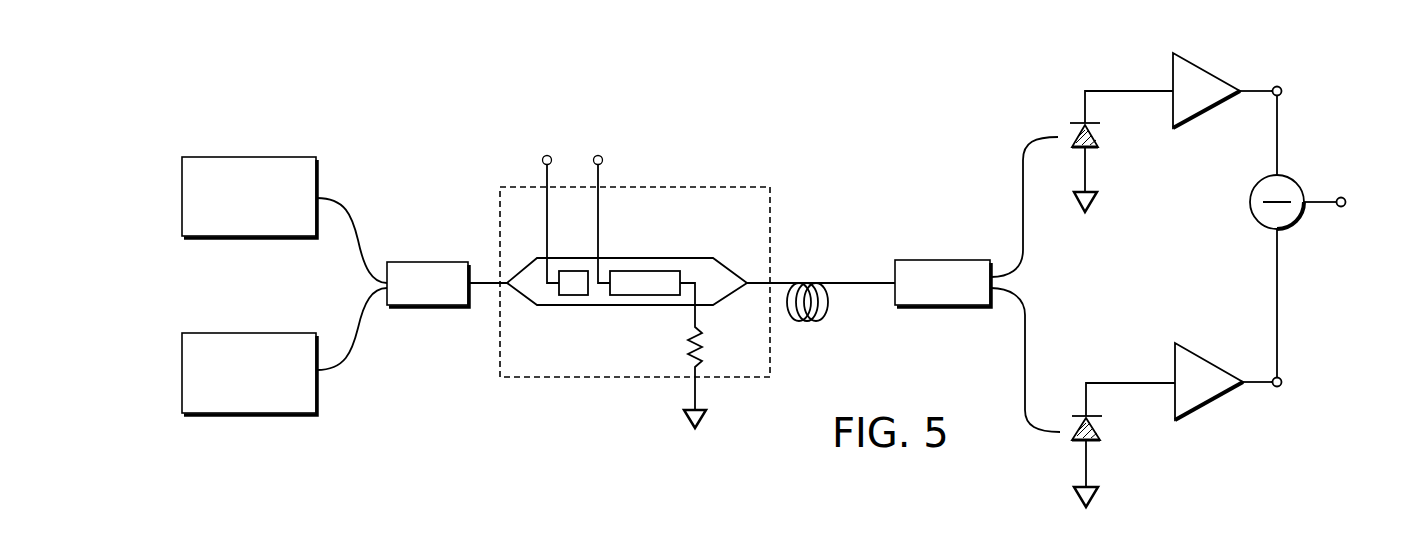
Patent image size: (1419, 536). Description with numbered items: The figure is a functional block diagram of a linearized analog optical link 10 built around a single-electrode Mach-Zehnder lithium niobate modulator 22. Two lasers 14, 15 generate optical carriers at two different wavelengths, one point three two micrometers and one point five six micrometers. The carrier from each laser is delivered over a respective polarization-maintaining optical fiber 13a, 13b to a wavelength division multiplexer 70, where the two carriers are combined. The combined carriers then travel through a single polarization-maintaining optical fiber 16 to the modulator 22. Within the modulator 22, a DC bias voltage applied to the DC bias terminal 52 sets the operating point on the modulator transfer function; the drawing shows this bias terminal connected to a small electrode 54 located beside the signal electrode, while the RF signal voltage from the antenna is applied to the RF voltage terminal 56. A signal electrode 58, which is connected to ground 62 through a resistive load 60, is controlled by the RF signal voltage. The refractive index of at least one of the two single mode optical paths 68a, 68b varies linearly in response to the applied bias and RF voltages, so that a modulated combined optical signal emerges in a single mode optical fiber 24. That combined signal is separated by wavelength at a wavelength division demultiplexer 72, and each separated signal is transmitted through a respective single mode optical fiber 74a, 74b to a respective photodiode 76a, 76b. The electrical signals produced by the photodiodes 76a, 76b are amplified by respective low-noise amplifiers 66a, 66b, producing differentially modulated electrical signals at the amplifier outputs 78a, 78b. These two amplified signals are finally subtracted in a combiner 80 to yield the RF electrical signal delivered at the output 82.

The optical link 10 is at (879, 178).
The polarization-maintaining optical fiber 13a is at (340, 198).
The polarization-maintaining optical fiber 13b is at (345, 375).
The laser 14 is at (250, 332).
The laser 15 is at (250, 156).
The polarization-maintaining optical fiber 16 is at (485, 290).
The Mach-Zehnder lithium niobate modulator 22 is at (697, 185).
The single mode optical fiber 24 is at (782, 280).
The DC bias terminal 52 is at (548, 153).
The bias electrode 54 is at (573, 296).
The RF voltage terminal 56 is at (597, 153).
The signal electrode 58 is at (660, 296).
The resistive load 60 is at (703, 348).
The ground 62 is at (707, 417).
The low-noise amplifier 66a is at (1200, 63).
The low-noise amplifier 66b is at (1200, 355).
The single mode optical path 68a is at (645, 258).
The single mode optical path 68b is at (610, 306).
The wavelength division multiplexer 70 is at (405, 262).
The wavelength division demultiplexer 72 is at (920, 260).
The single mode optical fiber 74a is at (1025, 238).
The single mode optical fiber 74b is at (1027, 335).
The photodiode 76a is at (1100, 143).
The photodiode 76b is at (1102, 435).
The amplifier output 78a is at (1281, 82).
The amplifier output 78b is at (1281, 373).
The combiner 80 is at (1291, 178).
The output 82 is at (1346, 197).